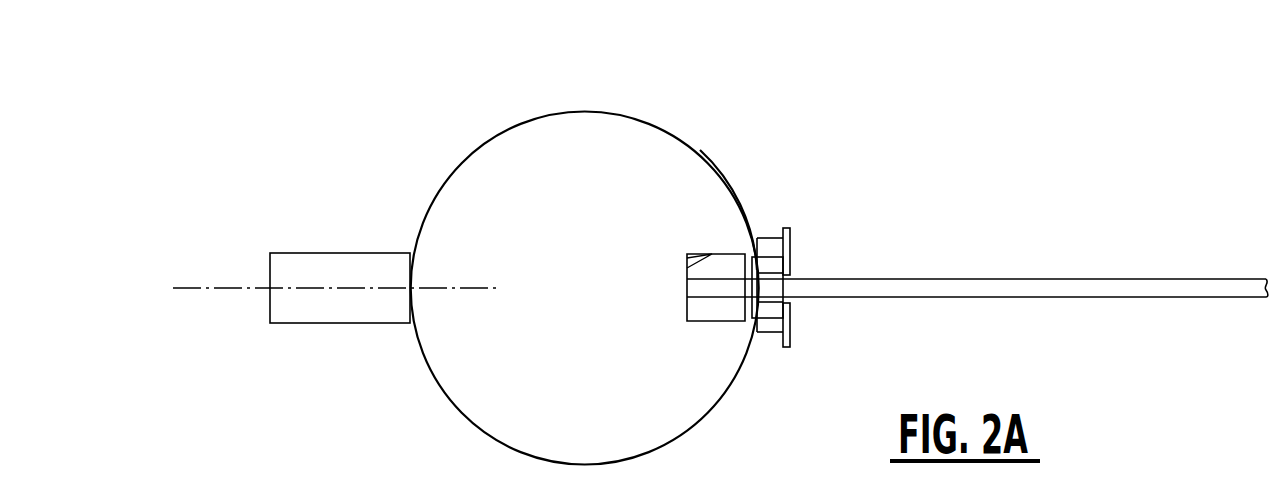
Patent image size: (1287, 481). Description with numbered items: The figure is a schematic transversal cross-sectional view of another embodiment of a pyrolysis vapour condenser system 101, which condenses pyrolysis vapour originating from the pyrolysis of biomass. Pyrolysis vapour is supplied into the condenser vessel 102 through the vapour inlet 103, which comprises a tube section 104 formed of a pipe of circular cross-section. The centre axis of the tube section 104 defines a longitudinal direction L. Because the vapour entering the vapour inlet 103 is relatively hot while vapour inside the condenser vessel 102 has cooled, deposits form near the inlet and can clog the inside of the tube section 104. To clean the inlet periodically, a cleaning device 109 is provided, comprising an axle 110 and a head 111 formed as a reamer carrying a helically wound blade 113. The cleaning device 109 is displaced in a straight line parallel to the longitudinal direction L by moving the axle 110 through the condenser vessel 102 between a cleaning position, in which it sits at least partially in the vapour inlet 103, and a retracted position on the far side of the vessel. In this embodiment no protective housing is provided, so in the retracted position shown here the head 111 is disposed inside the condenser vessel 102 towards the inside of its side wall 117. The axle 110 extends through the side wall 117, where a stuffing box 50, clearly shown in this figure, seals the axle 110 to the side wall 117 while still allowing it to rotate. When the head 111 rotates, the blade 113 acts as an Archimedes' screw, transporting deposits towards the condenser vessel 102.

The pyrolysis vapour condenser system 101 is at (205, 152).
The condenser vessel 102 is at (480, 143).
The vapour inlet 103 is at (275, 219).
The tube section 104 is at (285, 322).
The cleaning device 109 is at (848, 283).
The axle 110 is at (1032, 283).
The head 111 is at (723, 265).
The blade 113 is at (693, 267).
The side wall 117 is at (715, 167).
The stuffing box 50 is at (770, 332).
The longitudinal direction L is at (190, 290).